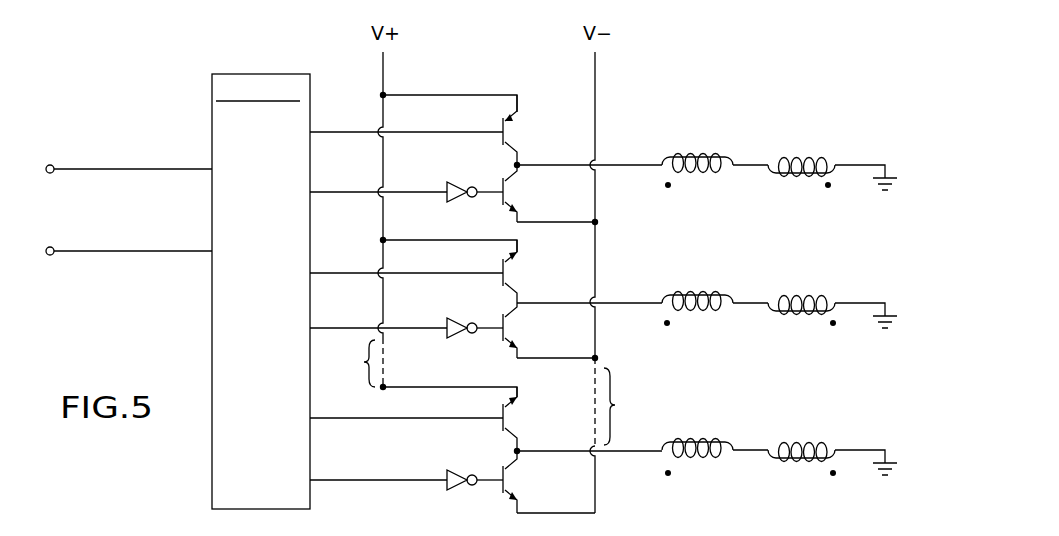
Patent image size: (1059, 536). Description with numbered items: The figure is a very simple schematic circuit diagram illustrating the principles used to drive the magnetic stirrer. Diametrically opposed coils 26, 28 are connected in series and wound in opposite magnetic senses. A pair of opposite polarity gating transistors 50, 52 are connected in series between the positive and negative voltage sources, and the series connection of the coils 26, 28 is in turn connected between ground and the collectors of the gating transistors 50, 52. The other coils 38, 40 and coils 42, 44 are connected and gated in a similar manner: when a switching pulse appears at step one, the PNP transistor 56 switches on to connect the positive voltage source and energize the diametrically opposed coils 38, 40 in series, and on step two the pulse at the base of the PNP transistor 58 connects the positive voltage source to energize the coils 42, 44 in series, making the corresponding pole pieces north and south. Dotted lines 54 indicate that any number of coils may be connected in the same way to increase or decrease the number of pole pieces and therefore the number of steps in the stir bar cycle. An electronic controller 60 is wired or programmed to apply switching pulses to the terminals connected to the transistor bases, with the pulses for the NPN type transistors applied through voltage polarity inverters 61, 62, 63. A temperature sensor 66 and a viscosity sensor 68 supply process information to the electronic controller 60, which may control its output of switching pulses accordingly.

The coil 26 is at (685, 153).
The coil 28 is at (798, 156).
The coil 38 is at (697, 292).
The coil 40 is at (808, 294).
The coil 42 is at (690, 444).
The coil 44 is at (800, 444).
The gating transistor 50 is at (510, 137).
The gating transistor 52 is at (510, 195).
The dotted lines 54 is at (487, 392).
The PNP transistor 56 is at (510, 283).
The PNP transistor 58 is at (512, 426).
The electronic controller 60 is at (212, 488).
The voltage polarity inverter 61 is at (457, 179).
The voltage polarity inverter 62 is at (458, 318).
The voltage polarity inverter 63 is at (455, 468).
The temperature sensor 66 is at (52, 173).
The viscosity sensor 68 is at (50, 255).